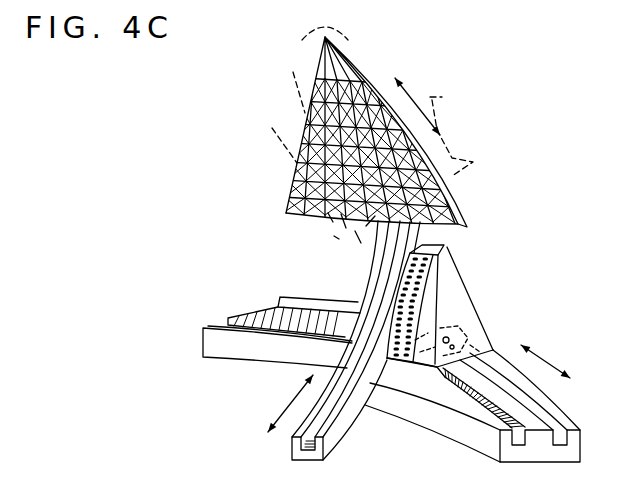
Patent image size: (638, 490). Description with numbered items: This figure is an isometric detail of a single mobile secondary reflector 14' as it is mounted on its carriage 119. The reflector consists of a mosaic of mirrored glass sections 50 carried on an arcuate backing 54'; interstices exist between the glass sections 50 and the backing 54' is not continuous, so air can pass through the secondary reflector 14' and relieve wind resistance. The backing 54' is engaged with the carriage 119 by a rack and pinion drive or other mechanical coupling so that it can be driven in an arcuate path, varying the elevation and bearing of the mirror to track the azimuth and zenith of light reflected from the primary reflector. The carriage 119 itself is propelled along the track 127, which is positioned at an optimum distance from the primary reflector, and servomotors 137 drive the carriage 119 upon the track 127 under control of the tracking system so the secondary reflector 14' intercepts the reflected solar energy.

The secondary reflector 14' is at (344, 135).
The backing 54' is at (396, 130).
The mirrored glass sections 50 is at (322, 214).
The track 127 is at (462, 413).
The carriage 119 is at (452, 270).
The servomotors 137 is at (470, 328).